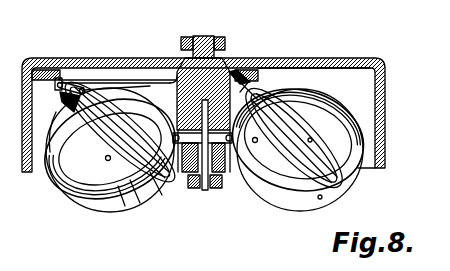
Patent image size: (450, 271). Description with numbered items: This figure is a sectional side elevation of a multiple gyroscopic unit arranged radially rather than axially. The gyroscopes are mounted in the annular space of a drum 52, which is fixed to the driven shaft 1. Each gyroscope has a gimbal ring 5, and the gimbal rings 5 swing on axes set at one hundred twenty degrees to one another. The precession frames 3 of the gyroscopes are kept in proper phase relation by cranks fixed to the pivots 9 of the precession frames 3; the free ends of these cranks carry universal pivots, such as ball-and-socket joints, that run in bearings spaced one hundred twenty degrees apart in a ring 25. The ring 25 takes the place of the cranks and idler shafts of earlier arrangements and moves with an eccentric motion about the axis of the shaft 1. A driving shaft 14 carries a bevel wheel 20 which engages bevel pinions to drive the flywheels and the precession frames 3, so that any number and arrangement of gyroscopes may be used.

The driven shaft 1 is at (204, 40).
The precession frame 3 is at (128, 197).
The gimbal ring 5 is at (296, 196).
The pivot 9 is at (58, 118).
The driving shaft 14 is at (208, 192).
The bevel wheel 20 is at (192, 178).
The ring 25 is at (244, 74).
The drum 52 is at (283, 66).